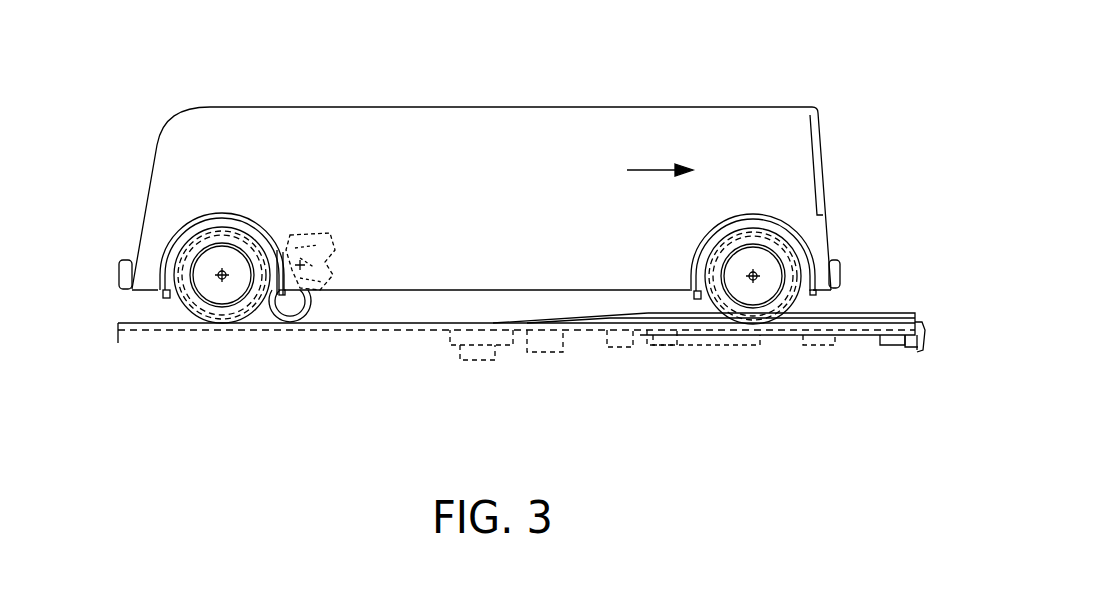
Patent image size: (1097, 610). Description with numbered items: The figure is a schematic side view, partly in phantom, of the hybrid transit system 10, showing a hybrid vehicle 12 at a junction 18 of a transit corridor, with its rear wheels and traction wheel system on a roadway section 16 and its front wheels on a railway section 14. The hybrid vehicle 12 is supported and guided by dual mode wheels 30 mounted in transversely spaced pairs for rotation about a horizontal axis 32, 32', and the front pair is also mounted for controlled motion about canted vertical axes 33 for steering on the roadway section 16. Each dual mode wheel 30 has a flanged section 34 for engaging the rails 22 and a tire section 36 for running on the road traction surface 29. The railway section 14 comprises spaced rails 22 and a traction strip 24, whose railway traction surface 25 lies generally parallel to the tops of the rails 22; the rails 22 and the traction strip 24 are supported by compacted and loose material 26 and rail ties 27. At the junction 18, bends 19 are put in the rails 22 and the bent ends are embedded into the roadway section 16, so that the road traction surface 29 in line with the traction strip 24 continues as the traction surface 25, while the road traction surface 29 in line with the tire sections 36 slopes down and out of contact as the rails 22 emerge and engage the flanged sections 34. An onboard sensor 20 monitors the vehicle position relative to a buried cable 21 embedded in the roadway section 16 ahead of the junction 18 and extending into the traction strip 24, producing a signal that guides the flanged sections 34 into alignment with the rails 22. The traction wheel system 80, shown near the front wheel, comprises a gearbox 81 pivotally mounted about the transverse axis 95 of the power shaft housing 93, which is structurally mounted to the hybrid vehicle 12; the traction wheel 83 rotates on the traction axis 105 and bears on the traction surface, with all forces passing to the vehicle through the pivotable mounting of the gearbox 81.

The hybrid transit system 10 is at (518, 160).
The hybrid vehicle 12 is at (605, 107).
The railway section 14 is at (519, 309).
The roadway section 16 is at (112, 310).
The junction 18 is at (642, 382).
The bend 19 is at (650, 313).
The onboard sensor 20 is at (697, 300).
The buried cable 21 is at (495, 360).
The rail 22 is at (865, 313).
The traction strip 24 is at (926, 335).
The railway traction surface 25 is at (920, 322).
The compacted and loose material 26 is at (912, 342).
The rail tie 27 is at (880, 342).
The road traction surface 29 is at (445, 323).
The dual mode wheel 30 is at (490, 287).
The horizontal axis 32 is at (748, 314).
The horizontal axis 32' is at (220, 315).
The canted vertical axis 33 is at (749, 188).
The flanged section 34 is at (200, 310).
The tire section 36 is at (180, 300).
The traction wheel system 80 is at (292, 326).
The gearbox 81 is at (285, 318).
The traction wheel 83 is at (263, 300).
The power shaft housing 93 is at (341, 261).
The transverse axis 95 is at (306, 265).
The traction axis 105 is at (270, 296).